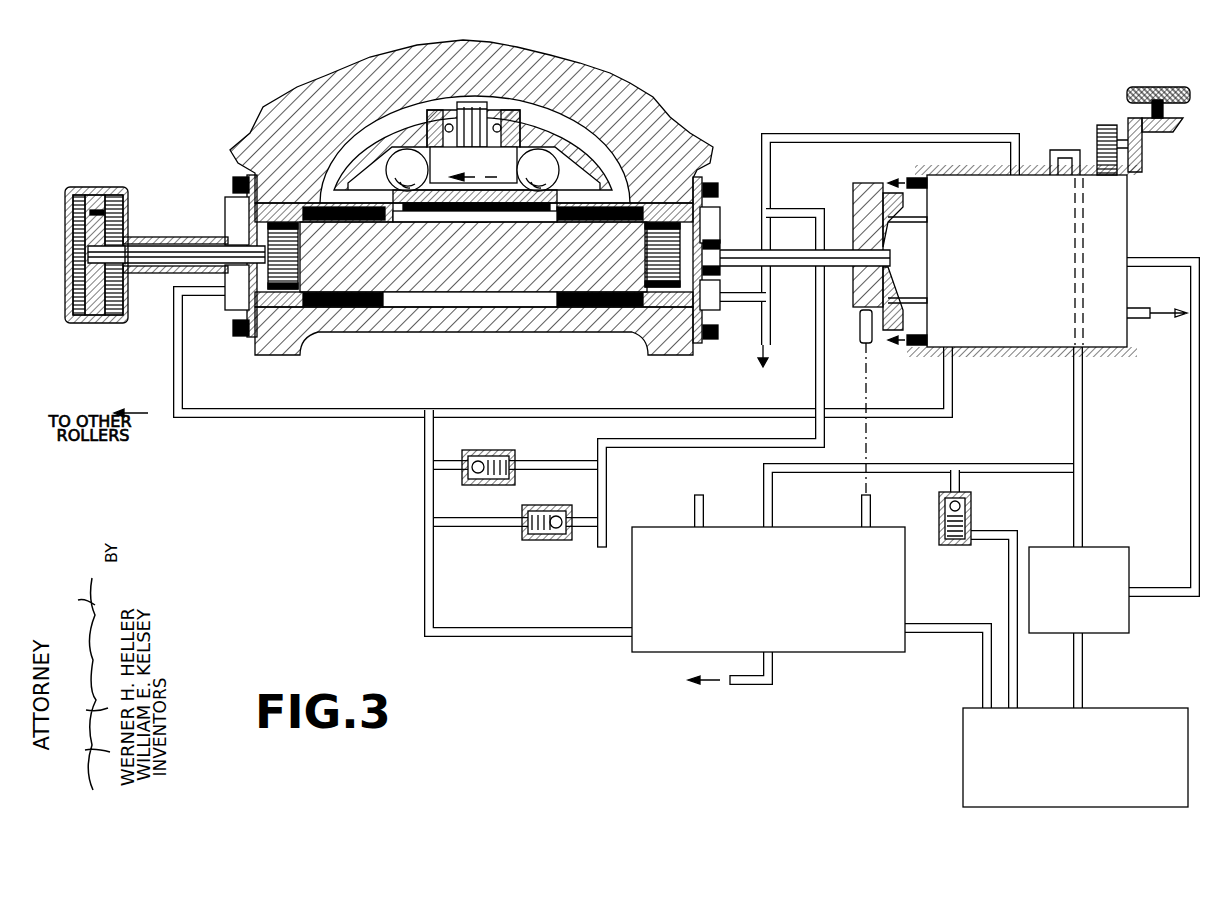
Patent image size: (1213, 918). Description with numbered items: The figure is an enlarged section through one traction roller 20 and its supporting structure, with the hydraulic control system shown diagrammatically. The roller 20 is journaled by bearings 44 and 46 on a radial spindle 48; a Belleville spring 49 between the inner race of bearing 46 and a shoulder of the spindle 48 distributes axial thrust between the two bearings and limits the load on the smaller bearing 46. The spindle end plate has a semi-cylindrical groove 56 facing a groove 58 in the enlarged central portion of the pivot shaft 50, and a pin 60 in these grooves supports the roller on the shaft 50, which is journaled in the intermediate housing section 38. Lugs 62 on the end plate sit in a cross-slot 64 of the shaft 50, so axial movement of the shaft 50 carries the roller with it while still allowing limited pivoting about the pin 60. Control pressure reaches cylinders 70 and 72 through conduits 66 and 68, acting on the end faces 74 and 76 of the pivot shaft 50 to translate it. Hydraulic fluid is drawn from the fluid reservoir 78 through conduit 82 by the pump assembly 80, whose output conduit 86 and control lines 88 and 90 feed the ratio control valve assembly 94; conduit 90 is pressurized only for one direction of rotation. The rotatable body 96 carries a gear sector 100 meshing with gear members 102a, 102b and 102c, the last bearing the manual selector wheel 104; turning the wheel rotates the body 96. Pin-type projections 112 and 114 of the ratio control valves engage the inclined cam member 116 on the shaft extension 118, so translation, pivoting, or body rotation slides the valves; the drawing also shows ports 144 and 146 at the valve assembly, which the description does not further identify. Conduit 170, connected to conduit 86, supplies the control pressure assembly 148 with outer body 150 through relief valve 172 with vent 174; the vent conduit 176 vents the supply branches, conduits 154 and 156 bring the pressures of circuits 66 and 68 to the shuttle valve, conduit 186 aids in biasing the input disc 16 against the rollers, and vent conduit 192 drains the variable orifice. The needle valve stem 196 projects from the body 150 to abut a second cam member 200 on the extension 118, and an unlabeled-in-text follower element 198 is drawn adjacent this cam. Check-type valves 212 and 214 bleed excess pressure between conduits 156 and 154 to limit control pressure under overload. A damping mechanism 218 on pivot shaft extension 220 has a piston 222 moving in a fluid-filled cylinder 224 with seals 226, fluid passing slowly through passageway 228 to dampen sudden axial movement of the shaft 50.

The input disc 16 is at (607, 154).
The roller 20 is at (330, 168).
The intermediate housing section 38 is at (592, 66).
The bearing 44 is at (472, 170).
The bearing 46 is at (500, 115).
The spindle 48 is at (473, 165).
The spring 49 is at (520, 146).
The pivot shaft 50 is at (474, 279).
The semi-cylindrical groove 56 is at (475, 204).
The groove 58 is at (410, 222).
The pin 60 is at (438, 222).
The lugs 62 is at (500, 222).
The cross-slot 64 is at (478, 226).
The conduit 66 is at (882, 133).
The conduit 68 is at (185, 357).
The cylinder 70 is at (228, 203).
The cylinder 72 is at (723, 212).
The end face 74 is at (268, 280).
The end face 76 is at (682, 234).
The fluid reservoir 78 is at (1145, 708).
The pump assembly 80 is at (1130, 612).
The conduit 82 is at (1085, 676).
The conduit 86 is at (1073, 518).
The control pressure conduit 88 is at (1084, 412).
The control pressure conduit 90 is at (1158, 256).
The ratio control valve assembly 94 is at (1147, 238).
The rotatable body 96 is at (1023, 253).
The gear sector 100 is at (1112, 178).
The gear member 102a is at (1106, 124).
The gear member 102b is at (1145, 162).
The gear member 102c is at (1160, 132).
The manual selector wheel 104 is at (1150, 87).
The pin-type projection 112 is at (896, 232).
The pin-type projection 114 is at (917, 302).
The cam member 116 is at (897, 180).
The shaft extension 118 is at (810, 250).
The port 144 is at (910, 168).
The port 146 is at (906, 350).
The control pressure assembly 148 is at (662, 512).
The outer body 150 is at (768, 589).
The conduit 154 is at (610, 486).
The conduit 156 is at (424, 497).
The conduit 170 is at (910, 462).
The pressure relief valve 172 is at (972, 503).
The vent conduit 174 is at (1008, 582).
The vent conduit 176 is at (706, 508).
The conduit 186 is at (776, 668).
The vent conduit 192 is at (942, 637).
The stem portion 196 is at (872, 506).
The follower pin 198 is at (860, 322).
The cam member 200 is at (866, 186).
The check-type valve 212 is at (493, 450).
The check-type valve 214 is at (542, 505).
The damping mechanism 218 is at (95, 178).
The pivot shaft extension 220 is at (185, 246).
The piston 222 is at (100, 318).
The cylinder 224 is at (70, 198).
The seals 226 is at (137, 237).
The passageway 228 is at (117, 210).